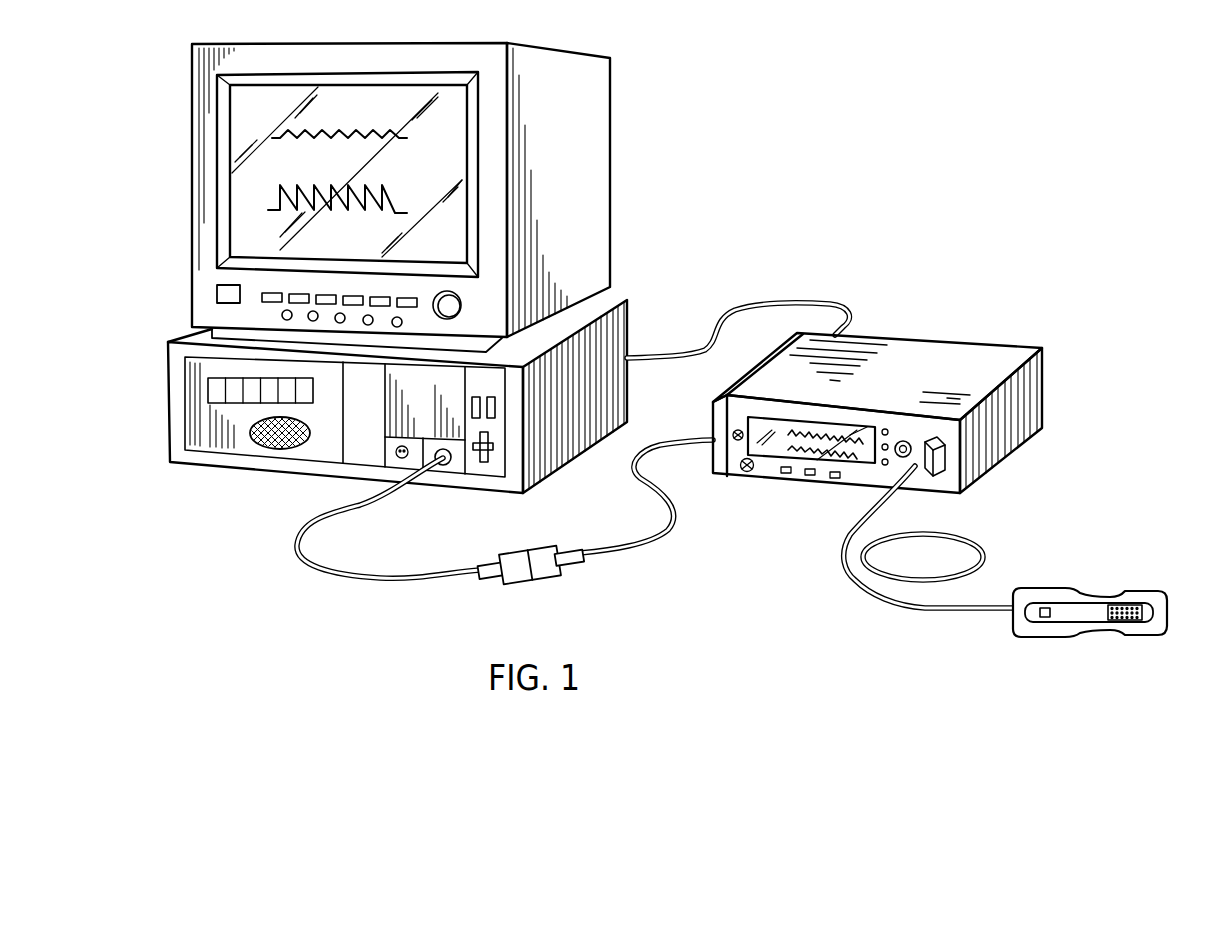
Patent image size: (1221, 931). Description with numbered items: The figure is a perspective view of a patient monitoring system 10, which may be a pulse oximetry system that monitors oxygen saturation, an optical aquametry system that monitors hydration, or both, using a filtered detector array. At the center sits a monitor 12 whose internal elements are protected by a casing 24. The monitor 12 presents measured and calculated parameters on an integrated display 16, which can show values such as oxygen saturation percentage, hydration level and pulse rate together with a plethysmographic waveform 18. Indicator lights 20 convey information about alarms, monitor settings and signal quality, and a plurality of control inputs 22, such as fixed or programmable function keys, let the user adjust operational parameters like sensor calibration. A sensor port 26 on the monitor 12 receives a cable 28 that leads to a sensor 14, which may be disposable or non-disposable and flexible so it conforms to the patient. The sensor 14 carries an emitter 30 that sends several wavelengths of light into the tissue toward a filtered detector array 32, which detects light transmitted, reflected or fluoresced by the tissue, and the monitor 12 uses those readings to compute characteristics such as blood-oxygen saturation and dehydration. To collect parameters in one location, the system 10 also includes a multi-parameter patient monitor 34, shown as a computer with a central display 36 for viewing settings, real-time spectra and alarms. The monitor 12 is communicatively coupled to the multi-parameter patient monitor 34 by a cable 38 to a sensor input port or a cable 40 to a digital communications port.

The patient monitoring system 10 is at (905, 183).
The monitor 12 is at (950, 337).
The sensor 14 is at (1125, 543).
The display 16 is at (847, 457).
The plethysmographic waveform 18 is at (793, 453).
The indicator lights 20 is at (888, 407).
The control inputs 22 is at (732, 433).
The casing 24 is at (870, 340).
The sensor port 26 is at (943, 457).
The cable 28 is at (870, 597).
The emitter 30 is at (1042, 617).
The filtered detector array 32 is at (1128, 602).
The multi-parameter patient monitor 34 is at (565, 47).
The display 36 is at (240, 210).
The cable 38 is at (763, 302).
The cable 40 is at (623, 557).